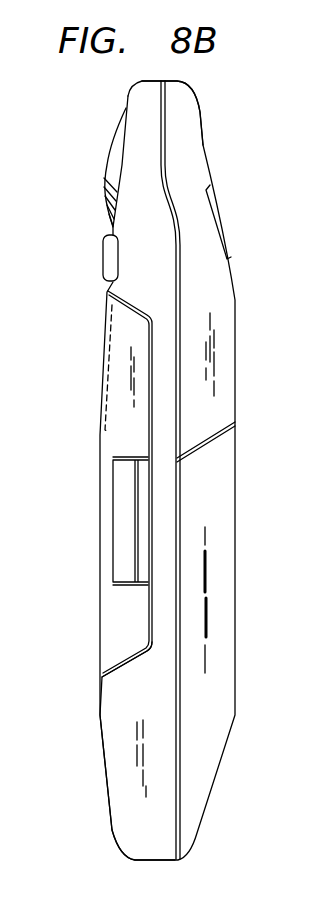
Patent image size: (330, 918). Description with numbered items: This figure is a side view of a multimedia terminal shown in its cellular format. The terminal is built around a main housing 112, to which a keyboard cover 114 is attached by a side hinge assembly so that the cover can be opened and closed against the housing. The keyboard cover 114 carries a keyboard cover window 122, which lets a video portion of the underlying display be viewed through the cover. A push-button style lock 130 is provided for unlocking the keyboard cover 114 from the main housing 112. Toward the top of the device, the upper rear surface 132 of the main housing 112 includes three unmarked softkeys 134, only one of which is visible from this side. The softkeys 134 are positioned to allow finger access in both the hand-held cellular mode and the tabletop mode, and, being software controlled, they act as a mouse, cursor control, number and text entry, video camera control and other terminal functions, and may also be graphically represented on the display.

The main housing 112 is at (218, 284).
The keyboard cover 114 is at (120, 648).
The keyboard cover window 122 is at (105, 352).
The push-button style lock 130 is at (120, 555).
The upper rear surface 132 is at (203, 146).
The softkeys 134 is at (223, 218).